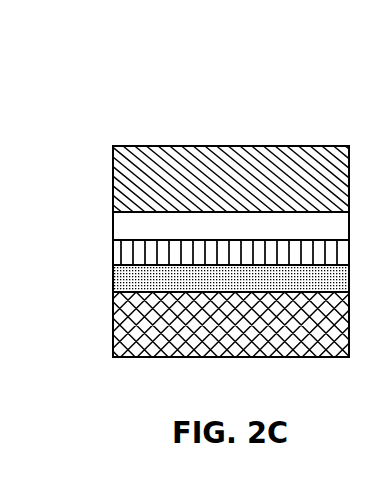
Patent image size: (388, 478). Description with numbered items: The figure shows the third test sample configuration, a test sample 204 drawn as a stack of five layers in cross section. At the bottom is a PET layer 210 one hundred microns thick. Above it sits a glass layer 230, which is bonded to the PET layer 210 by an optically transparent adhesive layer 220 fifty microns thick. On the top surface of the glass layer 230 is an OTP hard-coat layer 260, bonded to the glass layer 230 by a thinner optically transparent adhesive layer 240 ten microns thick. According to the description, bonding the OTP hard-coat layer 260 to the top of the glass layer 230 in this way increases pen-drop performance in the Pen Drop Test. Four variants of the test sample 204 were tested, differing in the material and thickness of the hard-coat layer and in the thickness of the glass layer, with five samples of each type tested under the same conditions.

The test sample 204 is at (108, 89).
The OTP hard-coat layer 260 is at (113, 189).
The optically transparent adhesive layer 240 is at (113, 229).
The glass layer 230 is at (113, 260).
The optically transparent adhesive layer 220 is at (113, 292).
The PET layer 210 is at (113, 340).